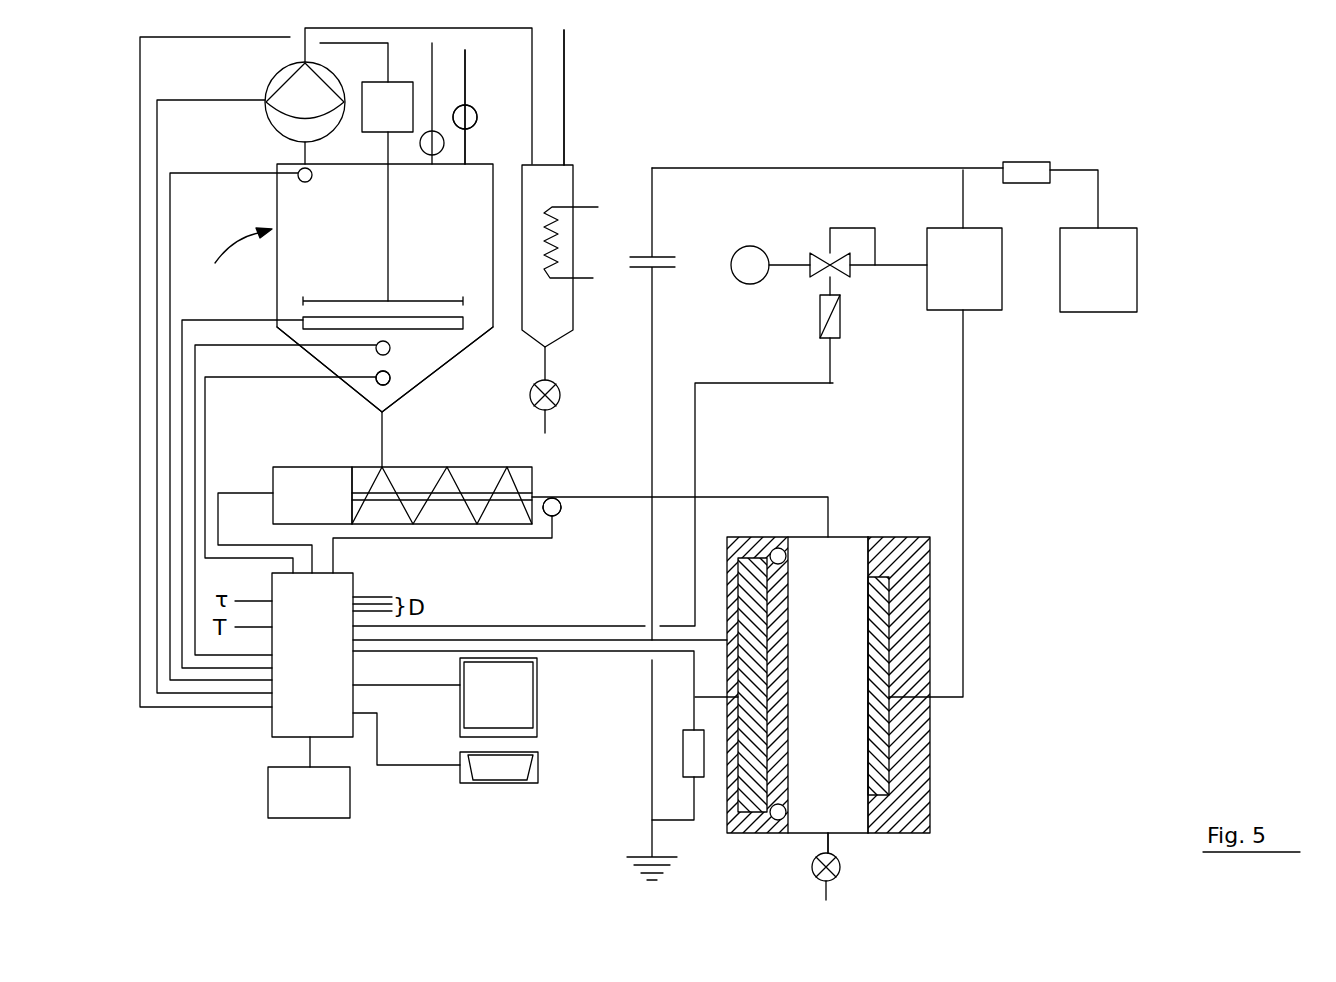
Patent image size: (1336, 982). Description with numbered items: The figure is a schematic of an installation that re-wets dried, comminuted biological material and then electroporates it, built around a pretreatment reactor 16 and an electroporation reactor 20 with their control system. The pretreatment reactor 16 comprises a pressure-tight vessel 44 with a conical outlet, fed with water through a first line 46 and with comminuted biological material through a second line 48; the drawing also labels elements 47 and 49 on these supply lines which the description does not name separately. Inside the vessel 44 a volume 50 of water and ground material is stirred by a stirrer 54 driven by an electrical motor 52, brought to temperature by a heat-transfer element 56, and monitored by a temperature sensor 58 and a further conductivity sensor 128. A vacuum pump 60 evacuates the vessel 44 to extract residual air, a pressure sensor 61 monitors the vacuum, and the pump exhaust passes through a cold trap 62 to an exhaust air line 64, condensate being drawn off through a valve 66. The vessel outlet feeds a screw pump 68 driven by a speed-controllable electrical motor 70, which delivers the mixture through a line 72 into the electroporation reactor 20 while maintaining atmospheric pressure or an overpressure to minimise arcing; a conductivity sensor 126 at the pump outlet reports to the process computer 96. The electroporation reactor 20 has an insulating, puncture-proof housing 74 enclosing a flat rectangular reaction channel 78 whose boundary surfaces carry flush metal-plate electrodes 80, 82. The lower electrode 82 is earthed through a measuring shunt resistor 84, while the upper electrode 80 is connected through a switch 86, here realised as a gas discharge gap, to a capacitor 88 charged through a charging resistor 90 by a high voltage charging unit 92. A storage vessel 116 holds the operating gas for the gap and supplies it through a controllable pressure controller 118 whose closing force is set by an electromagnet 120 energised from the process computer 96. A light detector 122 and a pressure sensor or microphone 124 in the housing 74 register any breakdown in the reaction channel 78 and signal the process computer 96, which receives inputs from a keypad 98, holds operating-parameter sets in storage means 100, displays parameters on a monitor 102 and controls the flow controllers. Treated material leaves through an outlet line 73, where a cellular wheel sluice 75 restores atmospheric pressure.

The pretreatment reactor 16 is at (229, 255).
The electroporation reactor 20 is at (825, 616).
The vessel 44 is at (457, 360).
The first line 46 is at (465, 62).
The sensor signal line 47 is at (475, 124).
The second line 48 is at (432, 85).
The sensor 49 is at (444, 146).
The volume of water and comminuted biological material 50 is at (349, 251).
The electrical motor 52 is at (398, 123).
The stirrer 54 is at (417, 300).
The heat-transfer element 56 is at (317, 334).
The temperature sensor 58 is at (376, 351).
The vacuum pump 60 is at (265, 112).
The pressure sensor 61 is at (303, 183).
The cold trap 62 is at (573, 295).
The exhaust air line 64 is at (565, 45).
The valve 66 is at (560, 393).
The screw pump 68 is at (443, 515).
The electrical motor 70 is at (330, 467).
The line 72 is at (560, 500).
The outlet line 73 is at (803, 838).
The housing 74 is at (937, 547).
The cellular wheel sluice 75 is at (840, 862).
The reaction channel 78 is at (863, 557).
The upper electrode 80 is at (882, 645).
The lower electrode 82 is at (740, 557).
The measuring shunt resistor 84 is at (682, 760).
The controllable switch 86 is at (988, 277).
The capacitor 88 is at (667, 270).
The charging resistor 90 is at (1033, 168).
The high voltage charging unit 92 is at (1128, 273).
The process computer 96 is at (322, 641).
The keypad 98 is at (500, 773).
The storage means 100 is at (312, 805).
The monitor 102 is at (523, 708).
The storage vessel 116 is at (748, 246).
The controllable pressure controller 118 is at (830, 262).
The electromagnet 120 is at (818, 303).
The light detector 122 is at (790, 552).
The pressure sensor 124 is at (788, 813).
The conductivity sensor 126 is at (546, 514).
The further conductivity sensor 128 is at (390, 382).